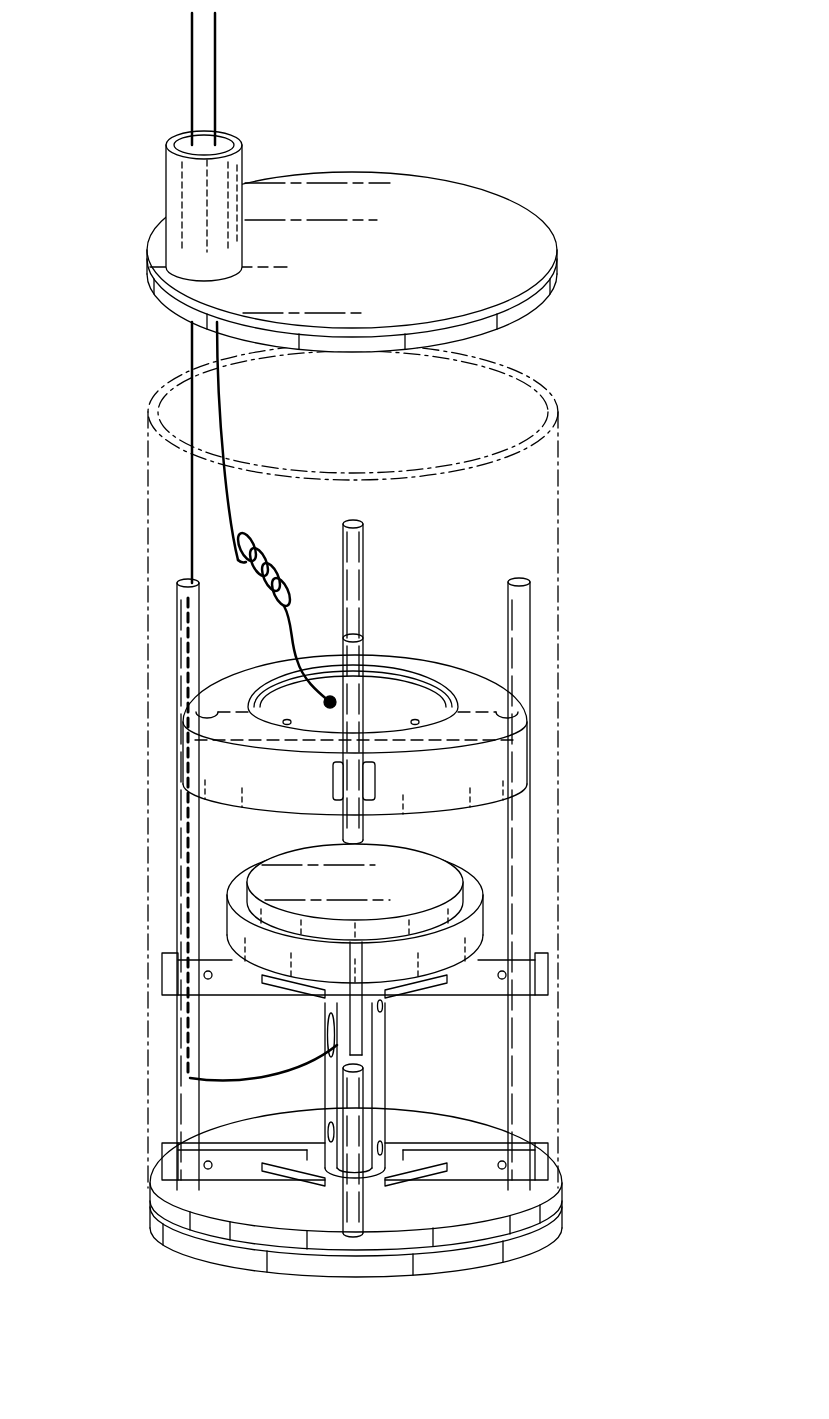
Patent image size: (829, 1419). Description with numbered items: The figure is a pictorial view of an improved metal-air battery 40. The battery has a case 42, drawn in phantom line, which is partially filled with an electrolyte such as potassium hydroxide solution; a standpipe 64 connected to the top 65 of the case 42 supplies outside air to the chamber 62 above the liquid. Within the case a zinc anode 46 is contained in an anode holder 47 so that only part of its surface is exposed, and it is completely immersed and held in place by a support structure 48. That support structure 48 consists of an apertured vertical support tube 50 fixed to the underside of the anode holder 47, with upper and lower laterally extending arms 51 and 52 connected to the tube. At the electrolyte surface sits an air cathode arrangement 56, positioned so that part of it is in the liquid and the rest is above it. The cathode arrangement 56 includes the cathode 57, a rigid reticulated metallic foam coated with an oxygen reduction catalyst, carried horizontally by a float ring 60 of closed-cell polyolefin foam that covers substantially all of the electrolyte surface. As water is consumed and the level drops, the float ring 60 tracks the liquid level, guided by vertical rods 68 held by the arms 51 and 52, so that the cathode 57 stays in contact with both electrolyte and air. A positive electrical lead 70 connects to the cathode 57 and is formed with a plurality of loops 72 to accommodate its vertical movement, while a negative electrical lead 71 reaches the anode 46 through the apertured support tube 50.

The metal-air battery 40 is at (26, 848).
The case 42 is at (319, 766).
The anode 46 is at (417, 866).
The anode holder 47 is at (470, 905).
The support structure 48 is at (356, 1109).
The apertured vertical support tube 50 is at (380, 1066).
The upper laterally extending arm 51 is at (233, 988).
The lower laterally extending arm 52 is at (268, 1145).
The air cathode arrangement 56 is at (355, 698).
The air cathode 57 is at (410, 700).
The float ring 60 is at (447, 795).
The chamber 62 is at (503, 500).
The standpipe 64 is at (168, 190).
The top 65 is at (408, 190).
The vertical rods 68 is at (365, 553).
The positive electrical lead 70 is at (215, 63).
The negative electrical lead 71 is at (192, 68).
The loops 72 is at (266, 549).